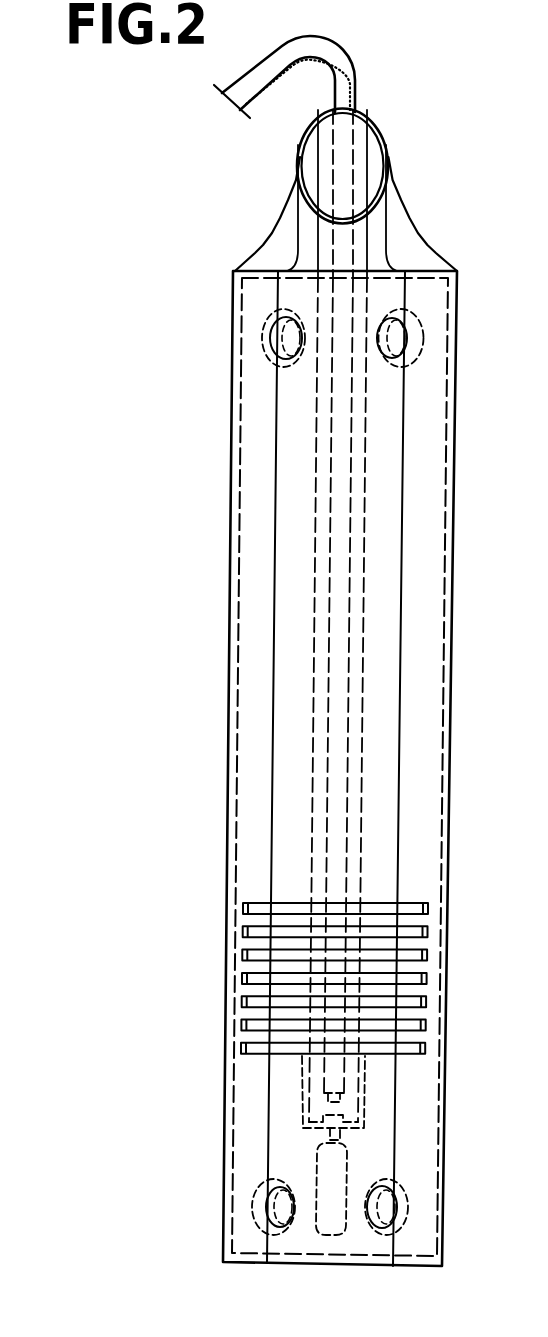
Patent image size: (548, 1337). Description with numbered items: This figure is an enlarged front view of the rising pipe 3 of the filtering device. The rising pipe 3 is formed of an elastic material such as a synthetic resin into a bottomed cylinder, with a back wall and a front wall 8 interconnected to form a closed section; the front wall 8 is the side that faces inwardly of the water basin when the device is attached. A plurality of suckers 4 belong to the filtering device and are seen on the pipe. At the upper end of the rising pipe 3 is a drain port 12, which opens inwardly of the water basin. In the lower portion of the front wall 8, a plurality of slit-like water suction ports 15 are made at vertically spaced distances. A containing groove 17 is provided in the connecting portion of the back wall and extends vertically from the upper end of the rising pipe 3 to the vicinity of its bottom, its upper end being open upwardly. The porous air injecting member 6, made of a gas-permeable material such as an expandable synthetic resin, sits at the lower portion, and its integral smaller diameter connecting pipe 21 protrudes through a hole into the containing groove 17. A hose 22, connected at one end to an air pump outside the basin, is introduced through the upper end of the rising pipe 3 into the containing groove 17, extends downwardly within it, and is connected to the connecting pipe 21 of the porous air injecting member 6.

The rising pipe 3 is at (224, 822).
The suckers 4 is at (262, 336).
The porous air injecting member 6 is at (346, 1163).
The front wall 8 is at (428, 720).
The drain port 12 is at (382, 146).
The water suction ports 15 is at (247, 956).
The containing groove 17 is at (357, 553).
The connecting pipe 21 is at (329, 1142).
The hose 22 is at (357, 82).